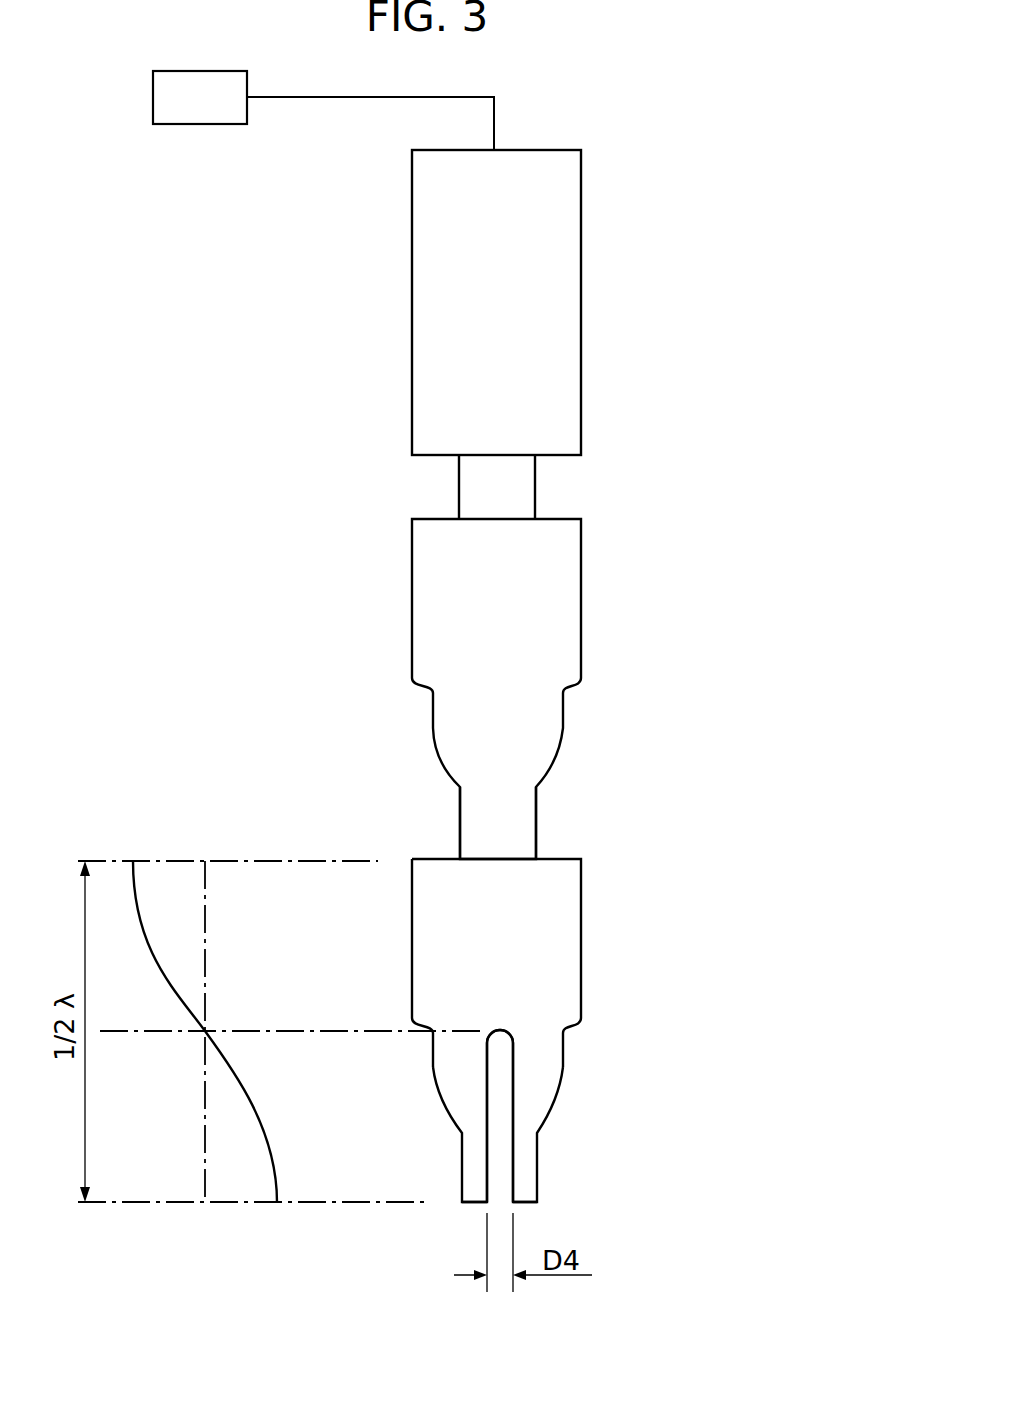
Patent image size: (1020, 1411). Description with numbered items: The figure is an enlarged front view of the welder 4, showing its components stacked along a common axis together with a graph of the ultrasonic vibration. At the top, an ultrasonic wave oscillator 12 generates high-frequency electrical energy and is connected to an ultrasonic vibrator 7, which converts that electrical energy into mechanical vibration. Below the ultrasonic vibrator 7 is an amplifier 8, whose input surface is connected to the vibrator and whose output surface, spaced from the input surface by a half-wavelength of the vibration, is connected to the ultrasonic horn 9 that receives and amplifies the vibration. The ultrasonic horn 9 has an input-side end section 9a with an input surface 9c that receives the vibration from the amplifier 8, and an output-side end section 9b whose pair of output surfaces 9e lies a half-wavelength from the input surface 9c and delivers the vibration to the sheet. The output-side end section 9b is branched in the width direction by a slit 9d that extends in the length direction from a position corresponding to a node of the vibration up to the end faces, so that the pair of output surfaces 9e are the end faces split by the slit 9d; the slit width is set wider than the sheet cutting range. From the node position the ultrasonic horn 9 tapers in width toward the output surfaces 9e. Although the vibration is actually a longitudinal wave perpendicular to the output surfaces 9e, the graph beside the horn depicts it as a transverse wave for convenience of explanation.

The ultrasonic wave oscillator 12 is at (216, 71).
The welder 4 is at (716, 181).
The ultrasonic vibrator 7 is at (563, 302).
The amplifier 8 is at (563, 590).
The ultrasonic horn 9 is at (631, 938).
The input-side end section 9a is at (600, 875).
The output-side end section 9b is at (558, 1181).
The input surface 9c is at (557, 860).
The slit 9d is at (502, 1087).
The output surfaces 9e is at (470, 1203).